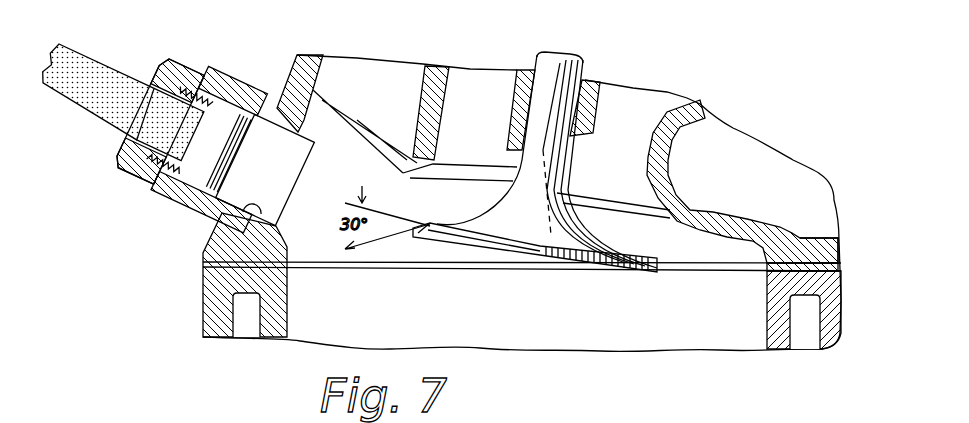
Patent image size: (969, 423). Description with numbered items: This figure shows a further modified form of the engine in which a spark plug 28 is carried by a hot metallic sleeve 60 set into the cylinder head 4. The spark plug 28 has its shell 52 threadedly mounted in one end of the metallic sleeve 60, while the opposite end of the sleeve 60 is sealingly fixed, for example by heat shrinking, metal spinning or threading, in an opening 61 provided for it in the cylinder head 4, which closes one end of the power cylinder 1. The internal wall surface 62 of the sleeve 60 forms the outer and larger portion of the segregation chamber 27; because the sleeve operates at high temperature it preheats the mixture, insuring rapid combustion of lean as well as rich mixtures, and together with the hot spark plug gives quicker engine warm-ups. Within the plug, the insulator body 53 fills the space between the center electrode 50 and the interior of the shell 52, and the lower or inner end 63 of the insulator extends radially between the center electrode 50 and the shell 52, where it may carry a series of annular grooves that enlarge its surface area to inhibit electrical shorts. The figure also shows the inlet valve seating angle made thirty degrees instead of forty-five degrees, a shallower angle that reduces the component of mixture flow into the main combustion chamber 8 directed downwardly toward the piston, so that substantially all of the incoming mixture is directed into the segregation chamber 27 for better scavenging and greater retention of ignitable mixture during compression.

The spark plug 28 is at (114, 78).
The spark plug shell 52 is at (214, 100).
The metallic sleeve 60 is at (263, 96).
The opening 61 is at (316, 98).
The lower or inner end of the spark plug insulator 63 is at (226, 120).
The segregation chamber 27 is at (278, 177).
The insulator body 53 is at (157, 152).
The center electrode 50 is at (200, 185).
The internal wall surface 62 is at (238, 252).
The cylinder head 4 is at (210, 277).
The power cylinder 1 is at (828, 288).
The main combustion chamber 8 is at (727, 248).